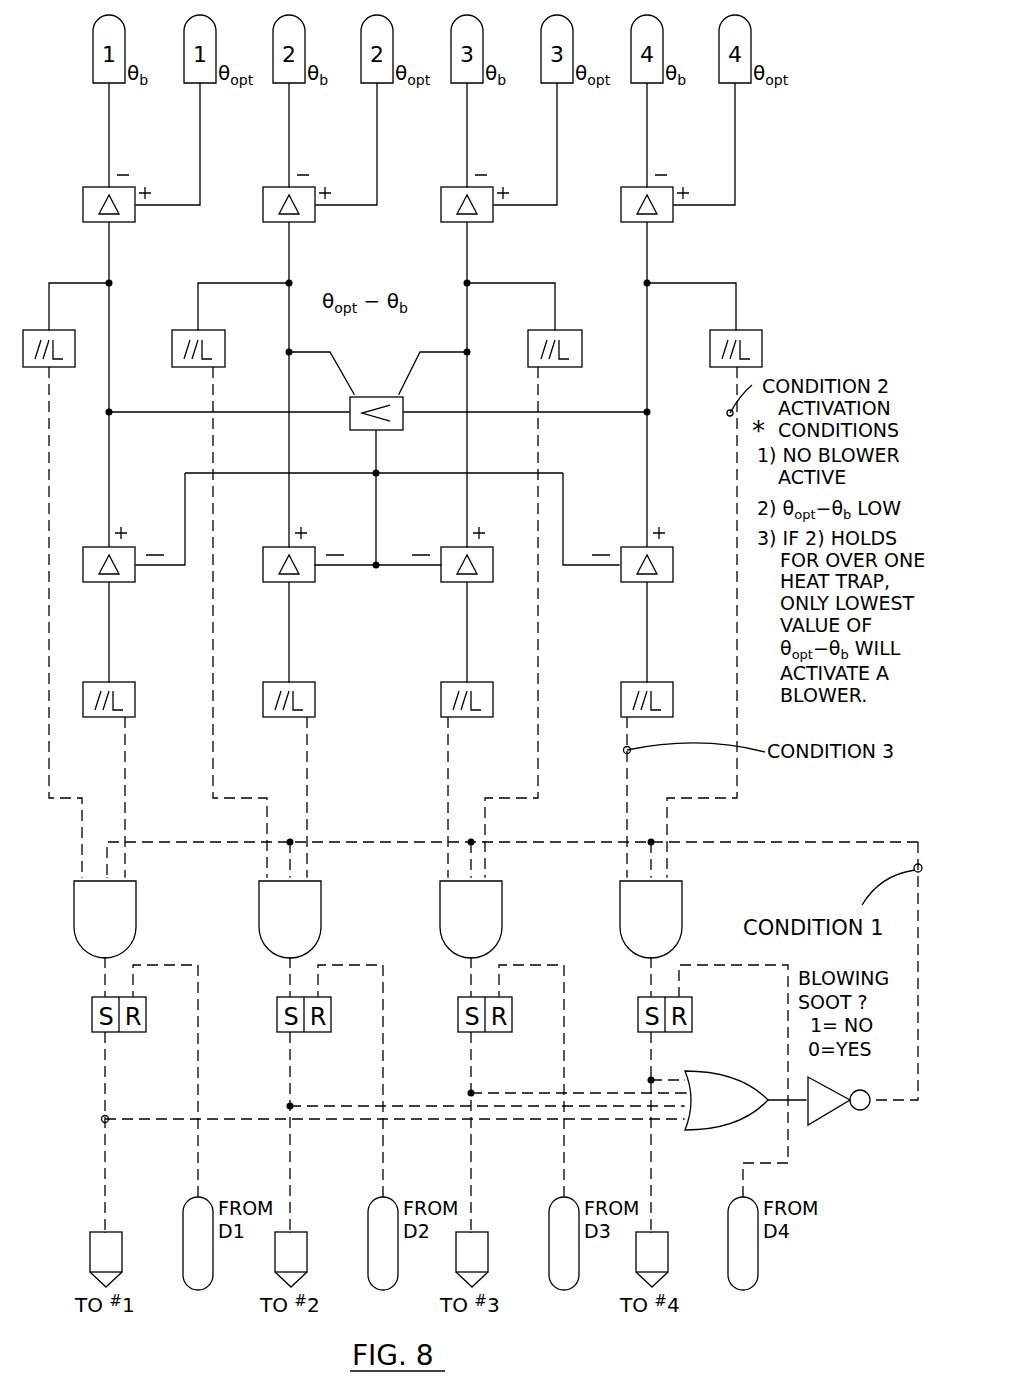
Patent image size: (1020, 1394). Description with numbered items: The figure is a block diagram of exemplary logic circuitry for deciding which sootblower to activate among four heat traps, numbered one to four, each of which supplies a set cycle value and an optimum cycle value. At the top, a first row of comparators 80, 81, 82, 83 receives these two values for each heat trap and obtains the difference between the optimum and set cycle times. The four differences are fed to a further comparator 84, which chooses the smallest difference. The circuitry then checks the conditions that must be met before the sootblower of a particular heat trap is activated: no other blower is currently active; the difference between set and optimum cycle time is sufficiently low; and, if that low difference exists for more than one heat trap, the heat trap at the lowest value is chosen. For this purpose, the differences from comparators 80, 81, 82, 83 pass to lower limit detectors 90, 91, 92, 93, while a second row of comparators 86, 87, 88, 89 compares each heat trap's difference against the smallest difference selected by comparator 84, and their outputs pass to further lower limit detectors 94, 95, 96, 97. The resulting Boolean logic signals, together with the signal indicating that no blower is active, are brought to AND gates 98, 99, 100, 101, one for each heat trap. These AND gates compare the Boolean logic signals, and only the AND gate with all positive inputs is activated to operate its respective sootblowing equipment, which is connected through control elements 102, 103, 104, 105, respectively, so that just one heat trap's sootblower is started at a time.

The comparator 80 is at (128, 222).
The comparator 81 is at (308, 222).
The comparator 82 is at (486, 222).
The comparator 83 is at (666, 222).
The comparator 84 is at (372, 397).
The comparator 86 is at (128, 582).
The comparator 87 is at (308, 582).
The comparator 88 is at (448, 582).
The comparator 89 is at (628, 582).
The lower limit detector 90 is at (75, 350).
The lower limit detector 91 is at (225, 350).
The lower limit detector 92 is at (582, 350).
The lower limit detector 93 is at (762, 352).
The lower limit detector 94 is at (125, 682).
The lower limit detector 95 is at (305, 682).
The lower limit detector 96 is at (452, 682).
The lower limit detector 97 is at (632, 682).
The AND gate 98 is at (136, 903).
The AND gate 99 is at (321, 903).
The AND gate 100 is at (502, 903).
The AND gate 101 is at (682, 903).
The control element 102 is at (112, 1230).
The control element 103 is at (297, 1230).
The control element 104 is at (478, 1230).
The control element 105 is at (658, 1230).